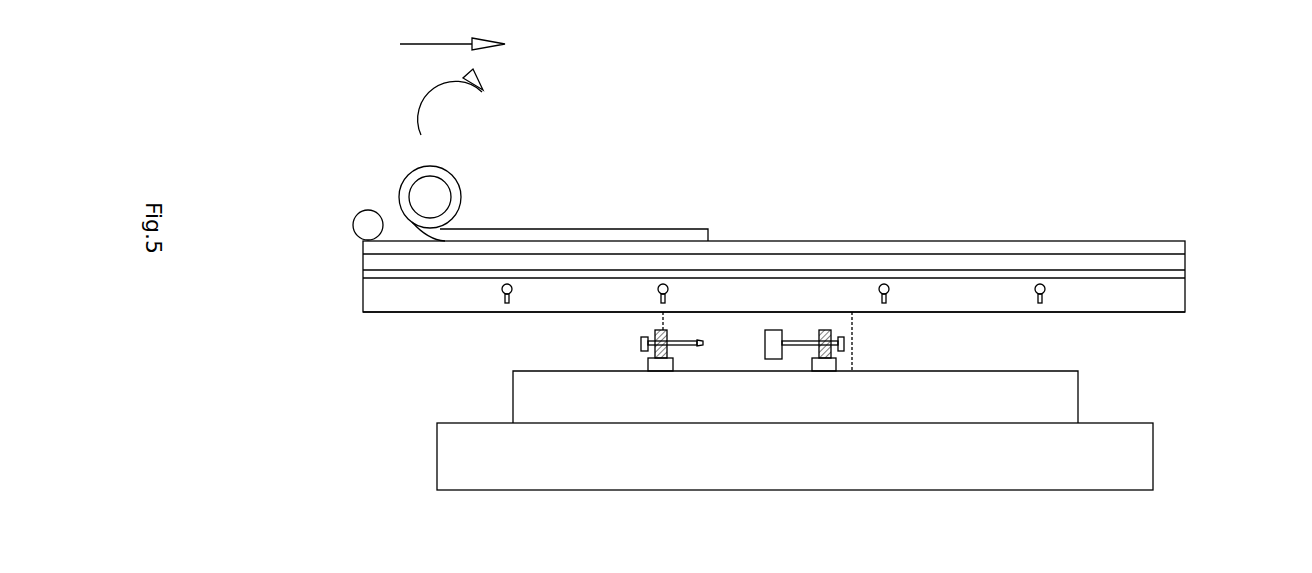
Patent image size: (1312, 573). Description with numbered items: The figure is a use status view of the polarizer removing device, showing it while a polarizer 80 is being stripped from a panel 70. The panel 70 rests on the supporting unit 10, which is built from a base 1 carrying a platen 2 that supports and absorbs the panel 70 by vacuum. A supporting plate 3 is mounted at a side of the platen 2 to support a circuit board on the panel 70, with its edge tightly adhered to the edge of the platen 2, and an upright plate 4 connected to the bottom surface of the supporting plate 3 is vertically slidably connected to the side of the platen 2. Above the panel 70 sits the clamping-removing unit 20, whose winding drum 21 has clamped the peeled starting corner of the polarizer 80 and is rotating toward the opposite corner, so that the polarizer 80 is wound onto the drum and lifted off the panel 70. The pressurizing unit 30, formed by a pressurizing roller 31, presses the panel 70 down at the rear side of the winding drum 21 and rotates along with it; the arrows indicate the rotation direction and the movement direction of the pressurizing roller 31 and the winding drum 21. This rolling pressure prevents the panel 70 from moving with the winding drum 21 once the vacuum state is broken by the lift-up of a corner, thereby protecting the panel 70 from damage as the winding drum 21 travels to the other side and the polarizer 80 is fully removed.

The base 1 is at (552, 403).
The platen 2 is at (1140, 261).
The supporting plate 3 is at (1110, 275).
The upright plate 4 is at (1117, 300).
The supporting unit 10 is at (754, 227).
The clamping-removing unit 20 is at (482, 175).
The winding drum 21 is at (435, 183).
The pressurizing unit 30 is at (303, 206).
The pressurizing roller 31 is at (368, 225).
The panel 70 is at (844, 247).
The polarizer 80 is at (563, 237).